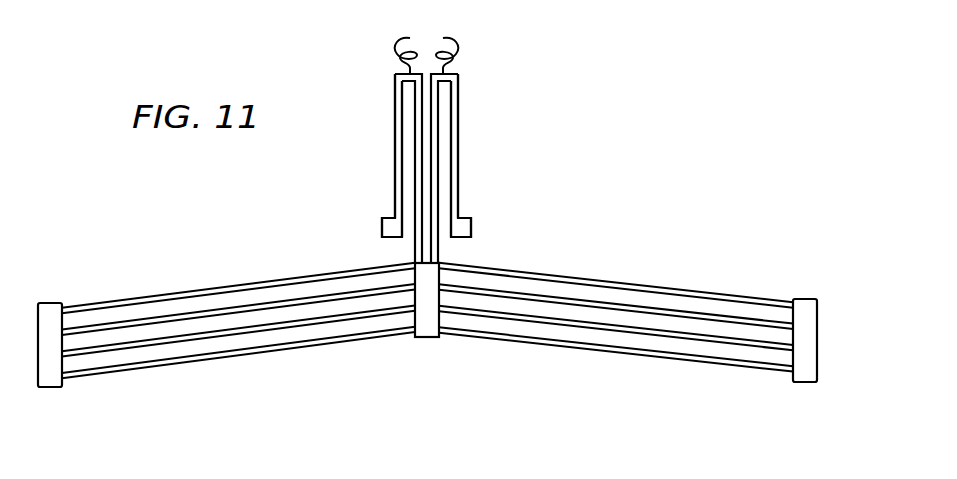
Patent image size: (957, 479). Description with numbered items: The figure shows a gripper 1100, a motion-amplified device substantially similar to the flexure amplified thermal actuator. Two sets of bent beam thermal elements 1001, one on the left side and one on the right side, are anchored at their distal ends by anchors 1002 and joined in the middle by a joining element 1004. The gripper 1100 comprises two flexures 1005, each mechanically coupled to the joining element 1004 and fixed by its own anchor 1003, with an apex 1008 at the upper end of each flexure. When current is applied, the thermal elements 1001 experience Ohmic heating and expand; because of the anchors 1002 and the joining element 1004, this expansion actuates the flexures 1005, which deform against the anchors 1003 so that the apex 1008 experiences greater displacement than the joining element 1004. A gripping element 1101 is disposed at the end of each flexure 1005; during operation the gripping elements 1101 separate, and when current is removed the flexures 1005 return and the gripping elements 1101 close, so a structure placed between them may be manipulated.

The gripper 1100 is at (665, 162).
The thermal elements 1001 is at (163, 317).
The anchors 1002 is at (47, 387).
The anchor 1003 is at (383, 227).
The joining element 1004 is at (428, 338).
The flexure 1005 is at (395, 163).
The apex 1008 is at (448, 75).
The gripping element 1101 is at (400, 42).